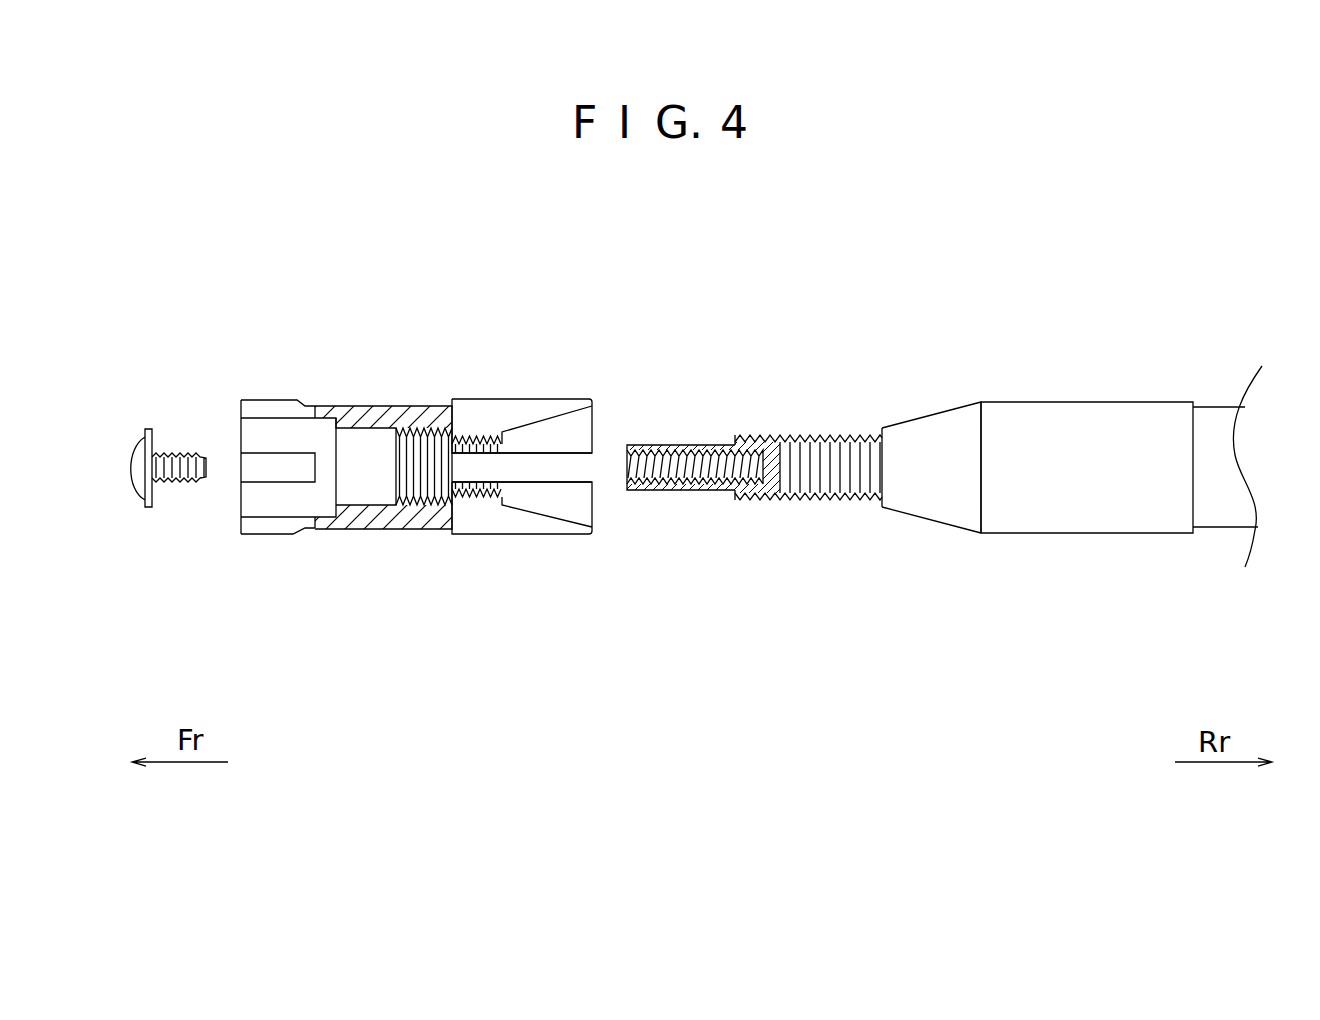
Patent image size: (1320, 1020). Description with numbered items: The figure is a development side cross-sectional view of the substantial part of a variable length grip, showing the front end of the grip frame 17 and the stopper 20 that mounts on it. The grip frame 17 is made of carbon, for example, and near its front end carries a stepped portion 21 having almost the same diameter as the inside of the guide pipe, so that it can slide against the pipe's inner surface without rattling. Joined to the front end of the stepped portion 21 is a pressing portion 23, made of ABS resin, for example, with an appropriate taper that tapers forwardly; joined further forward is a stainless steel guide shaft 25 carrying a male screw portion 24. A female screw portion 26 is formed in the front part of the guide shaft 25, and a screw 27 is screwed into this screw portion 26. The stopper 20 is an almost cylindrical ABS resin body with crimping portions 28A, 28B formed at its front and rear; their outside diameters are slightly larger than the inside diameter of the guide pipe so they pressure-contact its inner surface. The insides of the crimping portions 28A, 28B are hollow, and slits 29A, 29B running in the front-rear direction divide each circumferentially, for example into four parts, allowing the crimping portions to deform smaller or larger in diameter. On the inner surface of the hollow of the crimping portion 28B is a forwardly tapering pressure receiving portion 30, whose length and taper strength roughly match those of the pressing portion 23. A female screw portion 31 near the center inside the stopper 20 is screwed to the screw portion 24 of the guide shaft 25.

The grip frame 17 is at (1220, 530).
The stopper 20 is at (370, 530).
The stepped portion 21 is at (1043, 533).
The pressing portion 23 is at (927, 517).
The screw portion 24 is at (808, 502).
The guide shaft 25 is at (697, 445).
The screw portion 26 is at (695, 472).
The screw 27 is at (135, 505).
The crimping portion 28A is at (275, 400).
The crimping portion 28B is at (482, 400).
The slits 29A is at (248, 461).
The slits 29B is at (583, 455).
The pressure receiving portion 30 is at (582, 507).
The screw portion 31 is at (435, 445).